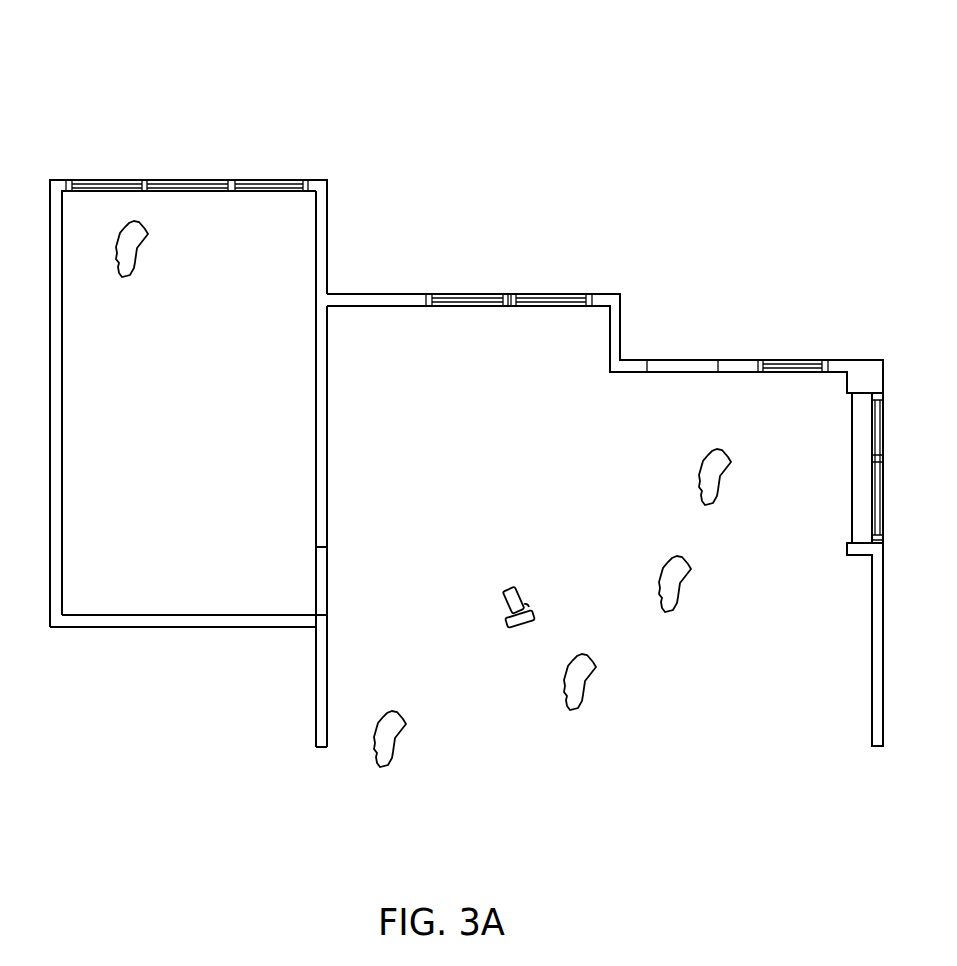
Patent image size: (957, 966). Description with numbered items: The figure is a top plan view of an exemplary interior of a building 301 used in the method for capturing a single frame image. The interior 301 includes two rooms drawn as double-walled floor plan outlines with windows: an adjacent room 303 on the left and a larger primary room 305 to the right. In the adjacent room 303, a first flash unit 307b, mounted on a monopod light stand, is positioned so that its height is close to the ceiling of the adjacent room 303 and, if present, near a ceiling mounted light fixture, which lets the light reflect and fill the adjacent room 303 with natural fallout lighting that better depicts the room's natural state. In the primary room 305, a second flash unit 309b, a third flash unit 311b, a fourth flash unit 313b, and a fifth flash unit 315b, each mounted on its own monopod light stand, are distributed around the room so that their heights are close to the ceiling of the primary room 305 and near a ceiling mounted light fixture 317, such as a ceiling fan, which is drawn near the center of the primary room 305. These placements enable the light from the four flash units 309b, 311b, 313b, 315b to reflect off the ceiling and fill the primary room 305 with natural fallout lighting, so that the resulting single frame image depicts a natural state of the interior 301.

The interior of a building 301 is at (141, 49).
The adjacent room 303 is at (198, 433).
The primary room 305 is at (560, 492).
The first flash unit 307b is at (147, 233).
The second flash unit 309b is at (405, 723).
The third flash unit 311b is at (595, 666).
The fourth flash unit 313b is at (690, 568).
The fifth flash unit 315b is at (730, 461).
The ceiling mounted light fixture 317 is at (500, 604).